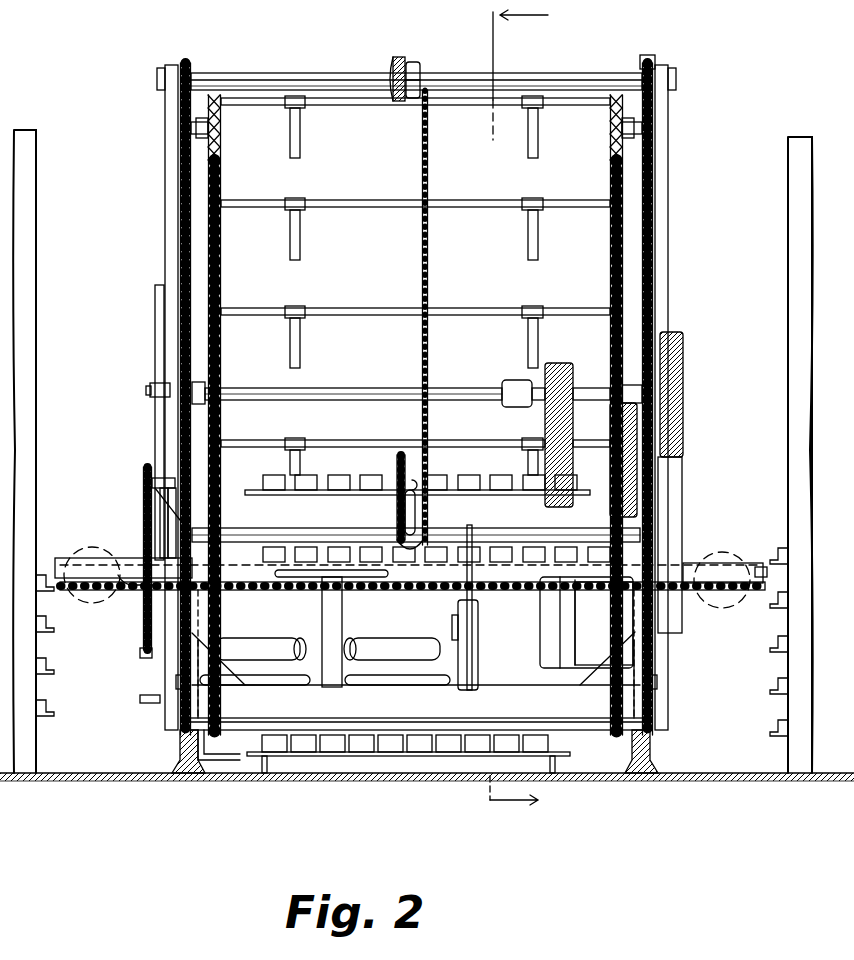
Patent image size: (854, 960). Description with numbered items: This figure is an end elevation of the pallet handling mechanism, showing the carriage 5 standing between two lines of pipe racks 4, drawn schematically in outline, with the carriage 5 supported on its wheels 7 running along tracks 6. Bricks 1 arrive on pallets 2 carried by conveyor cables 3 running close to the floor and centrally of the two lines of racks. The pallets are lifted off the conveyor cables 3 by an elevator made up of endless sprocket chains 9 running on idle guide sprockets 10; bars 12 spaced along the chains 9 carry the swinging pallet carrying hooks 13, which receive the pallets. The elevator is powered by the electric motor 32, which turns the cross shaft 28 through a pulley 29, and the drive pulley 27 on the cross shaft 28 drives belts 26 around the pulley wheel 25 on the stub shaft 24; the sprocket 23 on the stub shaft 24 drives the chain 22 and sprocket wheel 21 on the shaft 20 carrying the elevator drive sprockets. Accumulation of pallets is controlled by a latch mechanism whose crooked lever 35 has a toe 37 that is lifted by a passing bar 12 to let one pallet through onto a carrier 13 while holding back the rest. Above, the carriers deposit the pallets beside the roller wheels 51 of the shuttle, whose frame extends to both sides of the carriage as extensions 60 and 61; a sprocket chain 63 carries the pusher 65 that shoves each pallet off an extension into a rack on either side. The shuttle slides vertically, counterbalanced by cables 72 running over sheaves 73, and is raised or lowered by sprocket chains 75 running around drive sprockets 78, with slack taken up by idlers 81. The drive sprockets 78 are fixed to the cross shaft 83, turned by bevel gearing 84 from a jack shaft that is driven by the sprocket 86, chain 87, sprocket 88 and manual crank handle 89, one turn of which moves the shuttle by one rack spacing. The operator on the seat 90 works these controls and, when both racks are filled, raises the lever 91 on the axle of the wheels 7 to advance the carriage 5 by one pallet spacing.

The bricks 1 is at (42, 597).
The pallets 2 is at (55, 650).
The conveyor cables 3 is at (318, 797).
The pipe racks 4 is at (36, 503).
The carriage 5 is at (472, 546).
The tracks 6 is at (178, 750).
The wheels 7 is at (200, 604).
The endless sprocket chains 9 is at (221, 243).
The idle guide sprockets 10 is at (221, 112).
The bars 12 is at (323, 202).
The pallet carrying hooks 13 is at (300, 224).
The shaft 20 is at (292, 646).
The sprocket wheel 21 is at (140, 700).
The chain 22 is at (168, 535).
The sprocket 23 is at (143, 470).
The stub shaft 24 is at (152, 490).
The pulley wheel 25 is at (160, 515).
The belts 26 is at (155, 436).
The drive pulley 27 is at (150, 388).
The cross shaft 28 is at (440, 388).
The pulley 29 is at (683, 342).
The electric motor 32 is at (586, 622).
The crooked lever 35 is at (203, 748).
The toe 37 is at (268, 759).
The roller wheels 51 is at (682, 492).
The shuttle frame extension 60 is at (60, 562).
The shuttle frame extension 61 is at (740, 588).
The sprocket chain 63 is at (428, 584).
The pusher 65 is at (725, 556).
The cables 72 is at (165, 200).
The sheaves 73 is at (158, 74).
The sprocket chains 75 is at (655, 140).
The drive sprockets 78 is at (648, 58).
The idlers 81 is at (176, 680).
The cross shaft 83 is at (300, 76).
The bevel gearing 84 is at (402, 58).
The sprocket 86 is at (420, 63).
The chain 87 is at (429, 145).
The sprocket 88 is at (398, 530).
The manual crank handle 89 is at (416, 505).
The seat 90 is at (341, 593).
The lever 91 is at (478, 604).